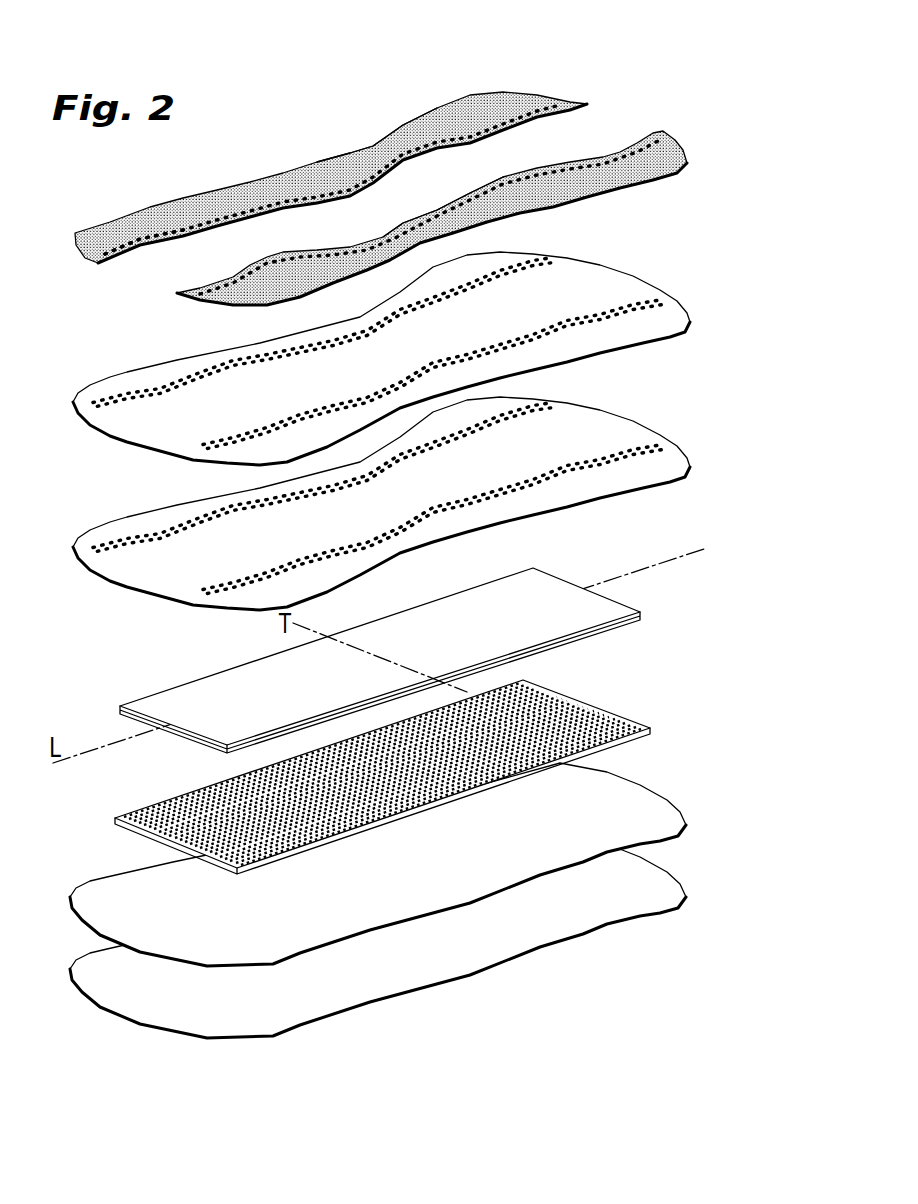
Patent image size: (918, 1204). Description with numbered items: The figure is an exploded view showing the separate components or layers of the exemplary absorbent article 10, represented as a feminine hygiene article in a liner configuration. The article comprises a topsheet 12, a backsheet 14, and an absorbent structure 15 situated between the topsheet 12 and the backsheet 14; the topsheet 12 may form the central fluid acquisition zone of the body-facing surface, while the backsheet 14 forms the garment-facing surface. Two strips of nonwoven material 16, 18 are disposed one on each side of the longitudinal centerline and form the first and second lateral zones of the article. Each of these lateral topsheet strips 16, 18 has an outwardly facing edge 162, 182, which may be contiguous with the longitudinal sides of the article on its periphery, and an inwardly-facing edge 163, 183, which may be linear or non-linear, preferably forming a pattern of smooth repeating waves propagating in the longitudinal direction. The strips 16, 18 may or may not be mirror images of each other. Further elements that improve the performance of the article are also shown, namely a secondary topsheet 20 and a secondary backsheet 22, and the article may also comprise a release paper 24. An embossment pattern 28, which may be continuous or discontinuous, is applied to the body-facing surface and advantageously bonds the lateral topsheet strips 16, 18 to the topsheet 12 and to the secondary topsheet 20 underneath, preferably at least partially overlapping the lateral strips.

The absorbent article 10 is at (711, 970).
The topsheet 12 is at (617, 290).
The backsheet 14 is at (645, 806).
The absorbent structure 15 is at (600, 610).
The lateral topsheet strip 16 is at (518, 97).
The lateral topsheet strip 18 is at (680, 155).
The secondary topsheet 20 is at (617, 430).
The secondary backsheet 22 is at (627, 717).
The release paper 24 is at (658, 892).
The embossment pattern 28 is at (125, 240).
The outwardly facing edge 162 is at (383, 132).
The inwardly-facing edge 163 is at (437, 152).
The outwardly facing edge 182 is at (577, 197).
The inwardly-facing edge 183 is at (497, 193).